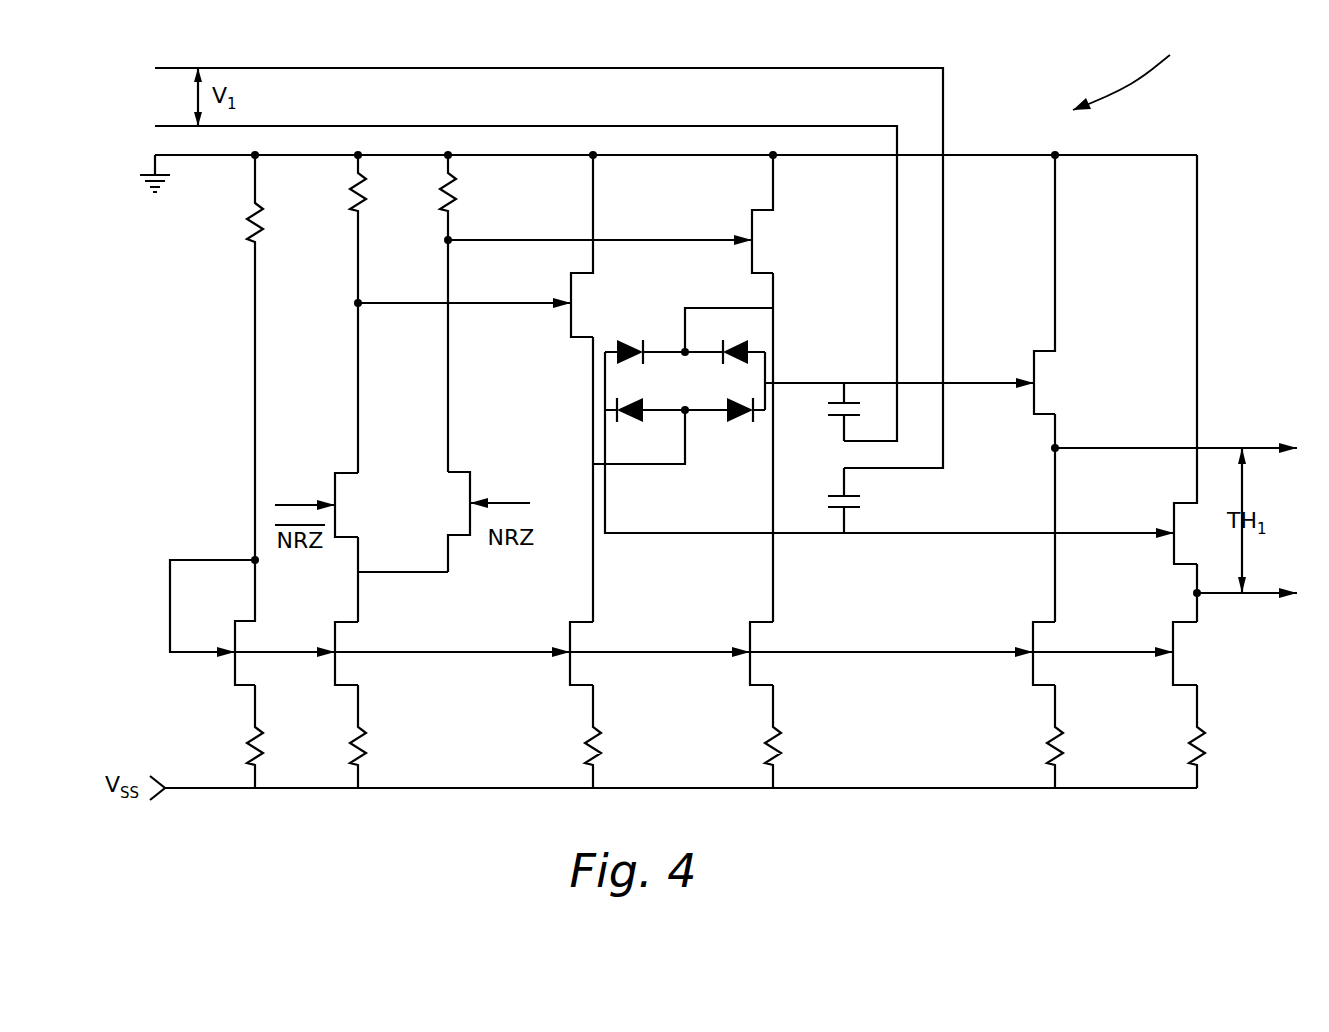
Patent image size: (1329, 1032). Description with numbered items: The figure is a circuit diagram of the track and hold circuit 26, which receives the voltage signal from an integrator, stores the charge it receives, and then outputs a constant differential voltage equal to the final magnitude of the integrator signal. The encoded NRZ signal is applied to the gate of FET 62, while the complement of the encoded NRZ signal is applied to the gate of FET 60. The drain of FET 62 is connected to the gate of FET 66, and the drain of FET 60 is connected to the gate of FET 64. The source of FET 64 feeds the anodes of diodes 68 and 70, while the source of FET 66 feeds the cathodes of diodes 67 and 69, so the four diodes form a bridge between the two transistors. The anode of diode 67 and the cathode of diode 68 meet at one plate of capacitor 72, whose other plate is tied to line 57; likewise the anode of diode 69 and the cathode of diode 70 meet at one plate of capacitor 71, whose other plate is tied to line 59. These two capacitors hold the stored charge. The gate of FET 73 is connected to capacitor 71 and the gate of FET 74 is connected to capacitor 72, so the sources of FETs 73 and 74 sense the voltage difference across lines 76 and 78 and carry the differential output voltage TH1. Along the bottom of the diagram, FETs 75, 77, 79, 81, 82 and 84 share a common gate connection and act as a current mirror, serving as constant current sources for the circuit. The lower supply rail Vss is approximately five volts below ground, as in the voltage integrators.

The track and hold circuit 26 is at (1142, 75).
The line 57 is at (155, 69).
The line 59 is at (155, 125).
The FET 60 is at (335, 472).
The FET 62 is at (470, 472).
The FET 64 is at (571, 337).
The FET 66 is at (752, 215).
The diode 67 is at (664, 336).
The diode 68 is at (637, 420).
The diode 69 is at (740, 340).
The diode 70 is at (722, 420).
The capacitor 71 is at (840, 420).
The capacitor 72 is at (860, 505).
The FET 73 is at (1034, 350).
The FET 74 is at (1174, 503).
The FET 75 is at (242, 620).
The line 76 is at (955, 383).
The FET 77 is at (352, 620).
The line 78 is at (990, 533).
The FET 79 is at (570, 620).
The FET 81 is at (750, 620).
The FET 82 is at (1033, 685).
The FET 84 is at (1173, 680).